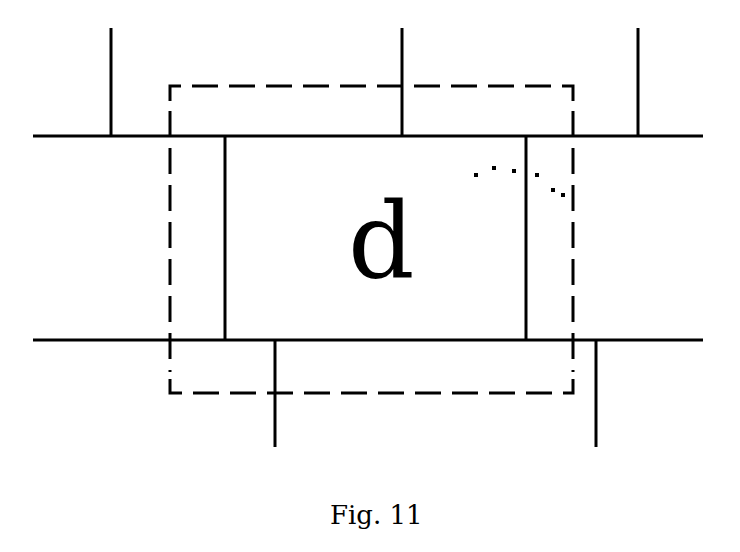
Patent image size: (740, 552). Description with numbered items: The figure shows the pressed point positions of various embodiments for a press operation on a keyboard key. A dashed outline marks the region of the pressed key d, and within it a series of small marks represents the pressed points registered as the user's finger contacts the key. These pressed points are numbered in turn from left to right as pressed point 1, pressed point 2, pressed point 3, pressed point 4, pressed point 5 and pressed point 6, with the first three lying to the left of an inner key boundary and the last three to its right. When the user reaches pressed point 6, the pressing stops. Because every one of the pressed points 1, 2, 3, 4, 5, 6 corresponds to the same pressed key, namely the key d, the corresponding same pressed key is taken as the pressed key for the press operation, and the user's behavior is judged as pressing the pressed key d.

The pressed point 1 is at (468, 163).
The pressed point 2 is at (488, 155).
The pressed point 3 is at (514, 157).
The pressed point 4 is at (541, 163).
The pressed point 5 is at (557, 177).
The pressed point 6 is at (560, 208).